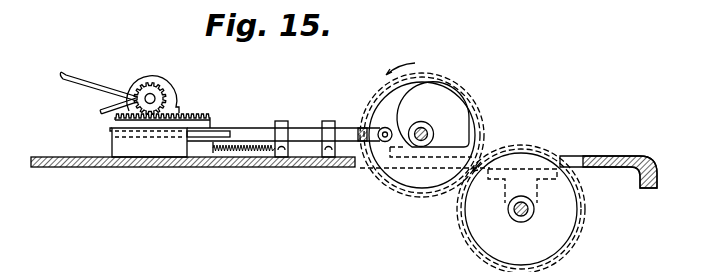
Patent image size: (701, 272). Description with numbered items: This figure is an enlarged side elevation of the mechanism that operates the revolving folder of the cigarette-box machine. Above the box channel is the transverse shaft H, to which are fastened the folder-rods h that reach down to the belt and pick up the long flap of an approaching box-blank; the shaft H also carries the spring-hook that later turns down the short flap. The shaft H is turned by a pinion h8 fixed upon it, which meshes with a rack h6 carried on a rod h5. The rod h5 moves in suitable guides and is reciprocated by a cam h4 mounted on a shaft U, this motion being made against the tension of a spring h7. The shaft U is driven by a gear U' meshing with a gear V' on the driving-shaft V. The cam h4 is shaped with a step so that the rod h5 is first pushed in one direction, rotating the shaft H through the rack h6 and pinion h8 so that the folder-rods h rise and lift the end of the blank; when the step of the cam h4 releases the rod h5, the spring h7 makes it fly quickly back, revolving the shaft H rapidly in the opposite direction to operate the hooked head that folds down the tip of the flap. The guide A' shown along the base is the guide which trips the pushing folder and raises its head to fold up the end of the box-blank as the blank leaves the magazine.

The guide A' is at (344, 171).
The transverse shaft H is at (148, 93).
The folder-rods h is at (99, 90).
The pinion h8 is at (161, 91).
The rack h6 is at (200, 115).
The rod h5 is at (303, 128).
The spring h7 is at (238, 152).
The cam h4 is at (433, 114).
The shaft U is at (462, 119).
The gear U' is at (422, 130).
The driving-shaft V is at (521, 223).
The gear V' is at (521, 208).